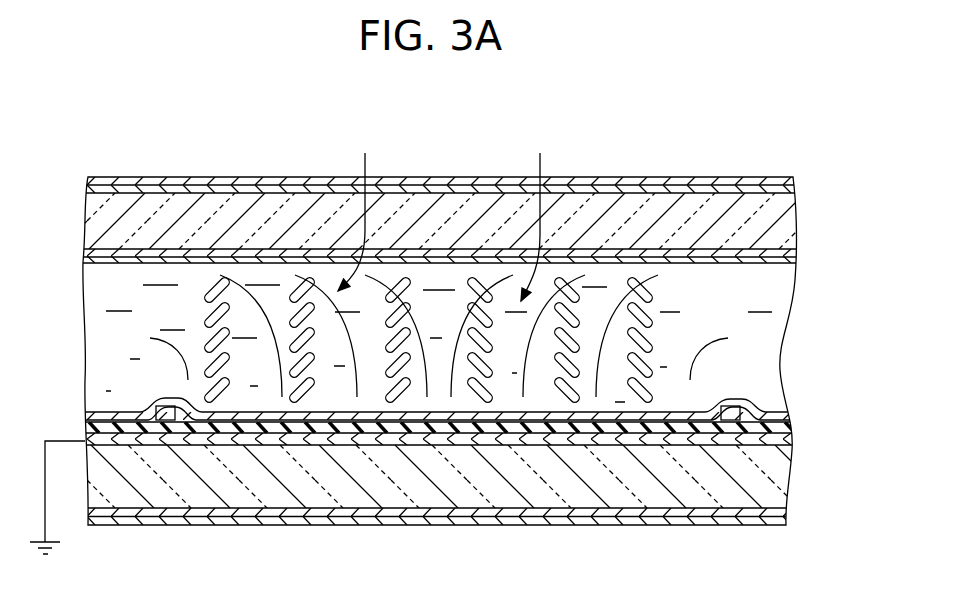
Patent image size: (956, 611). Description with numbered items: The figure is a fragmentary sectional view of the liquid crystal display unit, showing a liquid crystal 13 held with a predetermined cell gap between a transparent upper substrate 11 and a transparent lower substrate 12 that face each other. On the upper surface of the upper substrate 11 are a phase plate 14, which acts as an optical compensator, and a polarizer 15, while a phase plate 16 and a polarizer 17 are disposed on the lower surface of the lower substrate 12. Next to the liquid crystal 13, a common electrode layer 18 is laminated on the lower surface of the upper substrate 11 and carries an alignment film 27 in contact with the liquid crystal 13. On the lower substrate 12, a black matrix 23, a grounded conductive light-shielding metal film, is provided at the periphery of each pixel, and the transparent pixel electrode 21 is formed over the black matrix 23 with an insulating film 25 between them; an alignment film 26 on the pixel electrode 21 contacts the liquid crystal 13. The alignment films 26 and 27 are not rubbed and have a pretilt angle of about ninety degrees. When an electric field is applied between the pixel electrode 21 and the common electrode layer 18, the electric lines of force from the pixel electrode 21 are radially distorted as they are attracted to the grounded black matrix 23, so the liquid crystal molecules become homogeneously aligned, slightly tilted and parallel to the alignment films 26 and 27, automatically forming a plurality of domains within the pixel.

The upper substrate 11 is at (775, 220).
The lower substrate 12 is at (770, 487).
The liquid crystal 13 is at (768, 350).
The phase plate 14 is at (690, 191).
The polarizer 15 is at (623, 182).
The phase plate 16 is at (650, 521).
The polarizer 17 is at (706, 512).
The common electrode layer 18 is at (785, 253).
The pixel electrode 21 is at (580, 437).
The black matrix 23 is at (793, 438).
The insulating film 25 is at (795, 428).
The alignment film 26 is at (770, 410).
The alignment film 27 is at (745, 264).